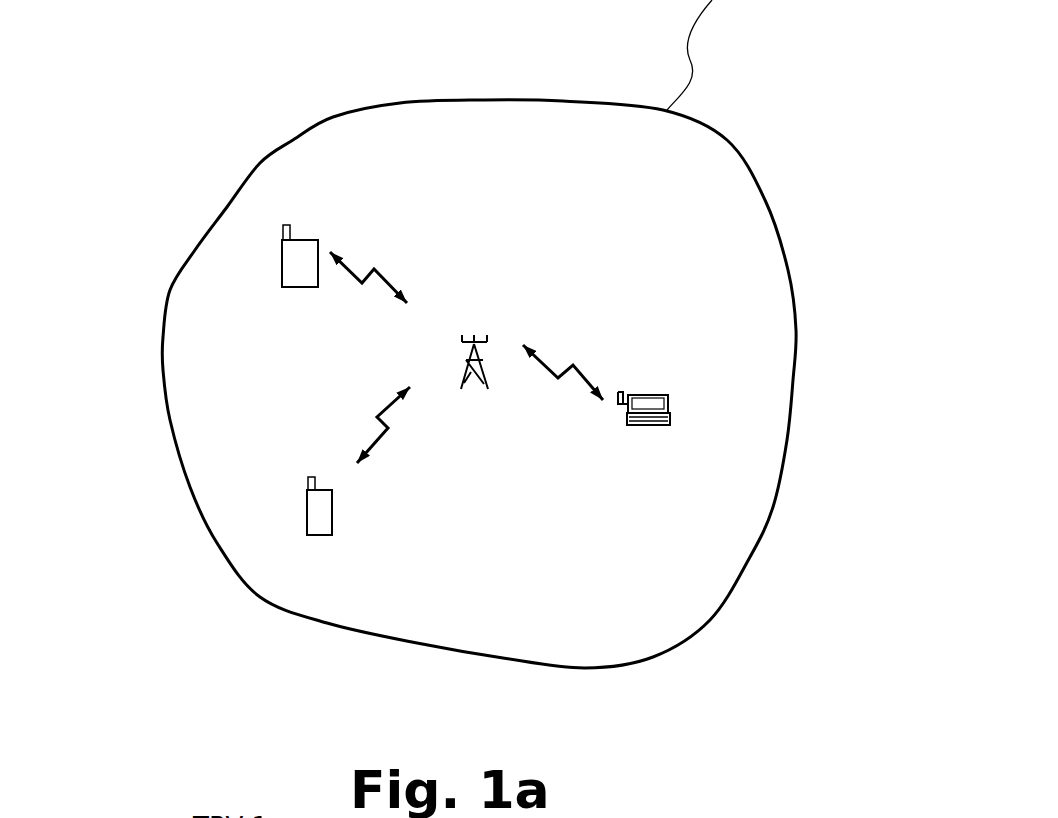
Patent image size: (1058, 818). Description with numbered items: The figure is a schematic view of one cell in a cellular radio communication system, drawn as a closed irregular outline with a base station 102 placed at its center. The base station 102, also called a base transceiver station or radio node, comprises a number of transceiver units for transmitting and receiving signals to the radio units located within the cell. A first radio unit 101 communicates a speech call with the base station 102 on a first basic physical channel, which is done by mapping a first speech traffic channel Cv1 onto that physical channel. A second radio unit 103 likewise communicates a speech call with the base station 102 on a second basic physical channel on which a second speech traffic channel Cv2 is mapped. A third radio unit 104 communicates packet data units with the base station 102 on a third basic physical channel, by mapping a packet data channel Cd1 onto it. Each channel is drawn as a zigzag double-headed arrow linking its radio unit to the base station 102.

The first radio unit 101 is at (307, 513).
The base station 102 is at (473, 335).
The second radio unit 103 is at (290, 255).
The third radio unit 104 is at (668, 402).
The first speech traffic channel Cv1 is at (387, 428).
The second speech traffic channel Cv2 is at (368, 273).
The packet data channel Cd1 is at (573, 365).